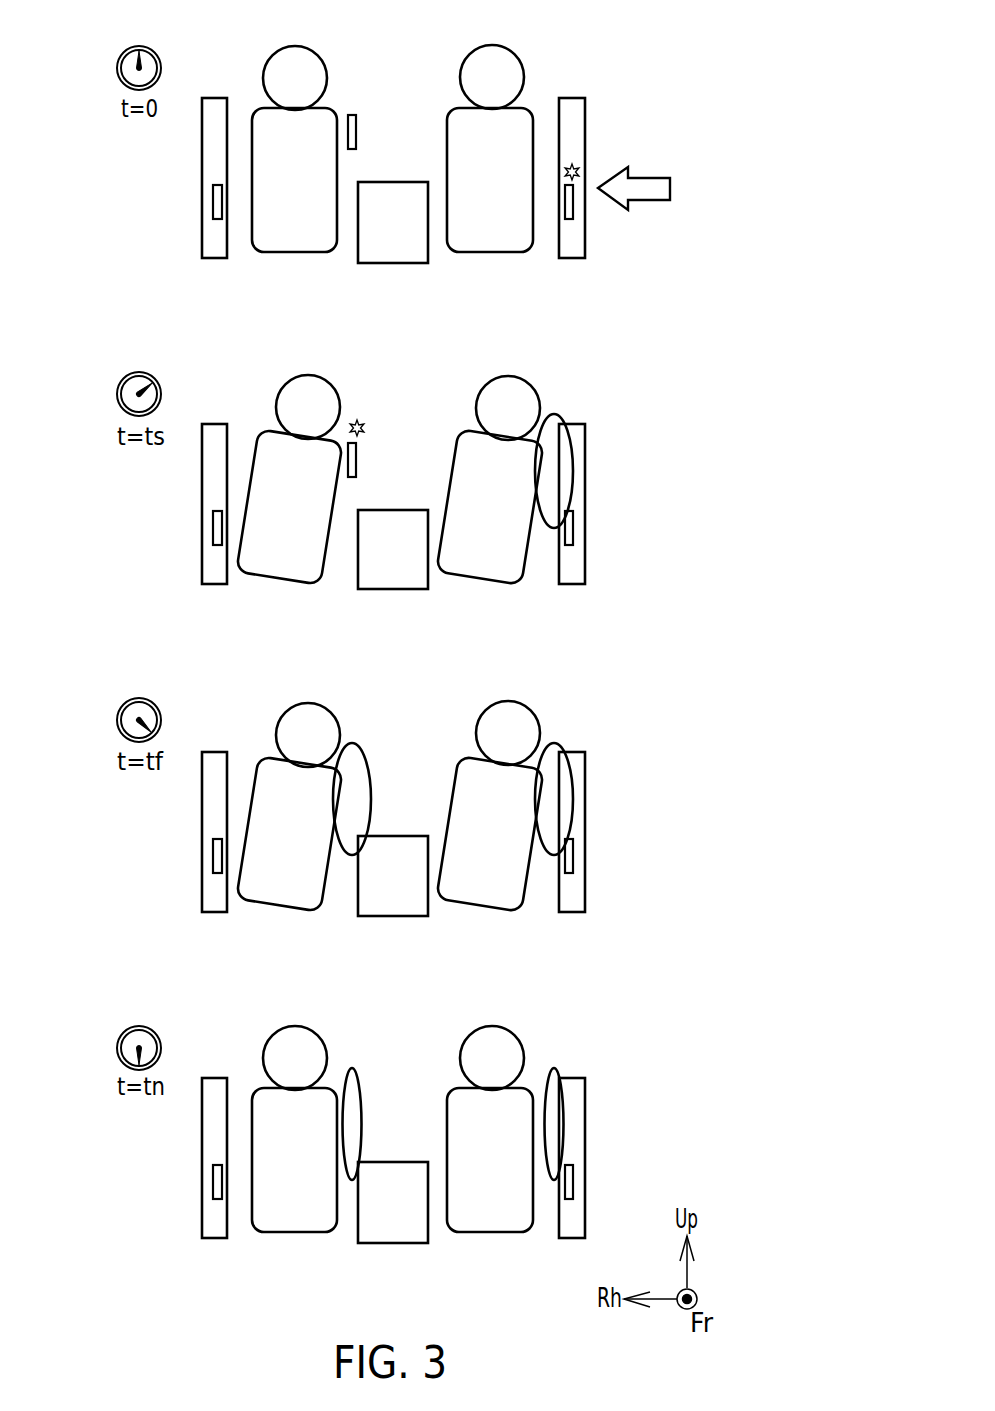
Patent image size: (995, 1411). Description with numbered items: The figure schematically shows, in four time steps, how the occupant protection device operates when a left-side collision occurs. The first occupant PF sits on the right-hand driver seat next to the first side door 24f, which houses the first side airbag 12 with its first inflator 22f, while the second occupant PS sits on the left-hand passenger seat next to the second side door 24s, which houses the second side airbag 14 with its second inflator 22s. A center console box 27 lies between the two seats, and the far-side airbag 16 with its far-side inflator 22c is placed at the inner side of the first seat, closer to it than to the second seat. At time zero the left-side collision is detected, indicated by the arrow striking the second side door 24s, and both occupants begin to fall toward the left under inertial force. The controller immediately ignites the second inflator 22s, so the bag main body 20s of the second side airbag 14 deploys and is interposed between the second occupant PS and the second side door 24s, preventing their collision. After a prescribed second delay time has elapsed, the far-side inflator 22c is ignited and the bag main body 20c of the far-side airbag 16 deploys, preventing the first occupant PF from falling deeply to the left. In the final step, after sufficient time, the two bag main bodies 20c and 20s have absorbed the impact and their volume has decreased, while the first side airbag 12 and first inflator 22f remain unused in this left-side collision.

The first side airbag 12 is at (154, 712).
The first inflator 22f is at (213, 205).
The first side door 24f is at (202, 140).
The far-side airbag 16 is at (396, 275).
The far-side inflator 22c is at (356, 128).
The center console box 27 is at (395, 182).
The second side airbag 14 is at (622, 710).
The second inflator 22s is at (573, 205).
The second side door 24s is at (585, 110).
The bag main body 20s is at (573, 467).
The bag main body 20c is at (368, 762).
The first occupant PF is at (290, 47).
The second occupant PS is at (497, 47).